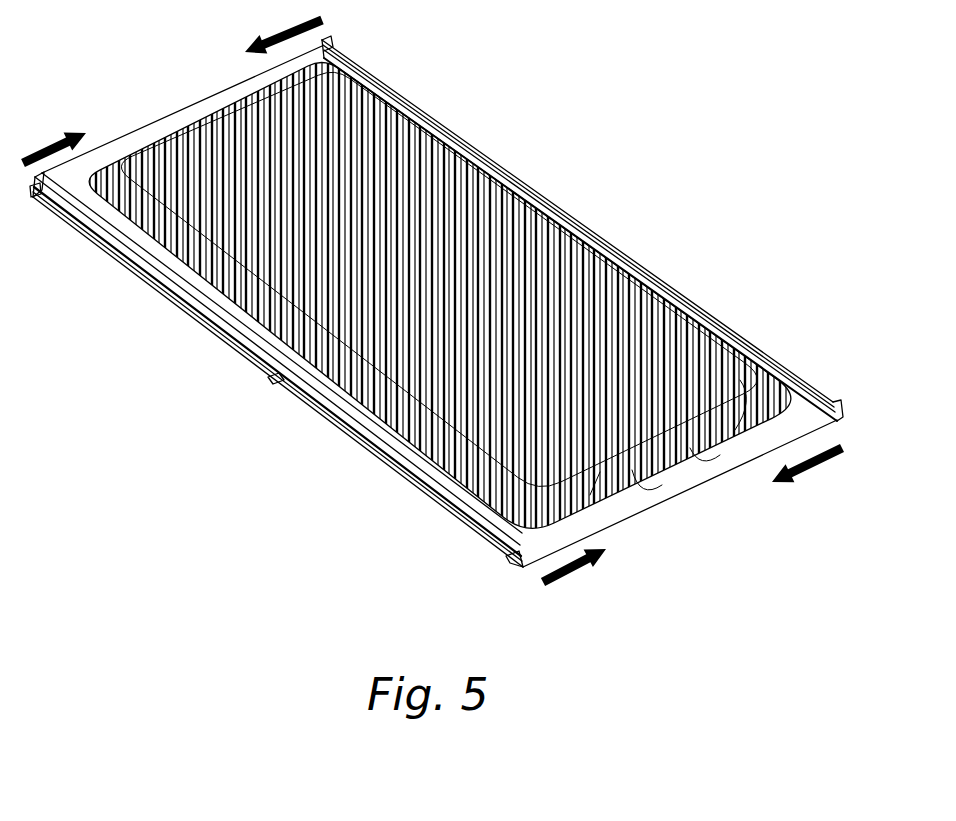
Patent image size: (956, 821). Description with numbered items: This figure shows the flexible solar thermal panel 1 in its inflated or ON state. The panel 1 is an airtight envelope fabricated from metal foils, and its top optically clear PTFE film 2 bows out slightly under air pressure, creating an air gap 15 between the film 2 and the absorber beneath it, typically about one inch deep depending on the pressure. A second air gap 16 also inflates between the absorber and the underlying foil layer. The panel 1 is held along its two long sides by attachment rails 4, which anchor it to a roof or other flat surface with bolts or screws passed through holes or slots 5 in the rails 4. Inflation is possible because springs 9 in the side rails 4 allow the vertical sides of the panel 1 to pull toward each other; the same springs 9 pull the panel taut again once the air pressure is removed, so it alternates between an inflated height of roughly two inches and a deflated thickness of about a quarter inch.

The panel 1 is at (127, 122).
The optically clear film 2 is at (236, 100).
The attachment rails 4 is at (390, 80).
The holes or slots 5 is at (268, 381).
The springs 9 is at (521, 568).
The air gap 15 is at (647, 497).
The second air gap 16 is at (703, 463).